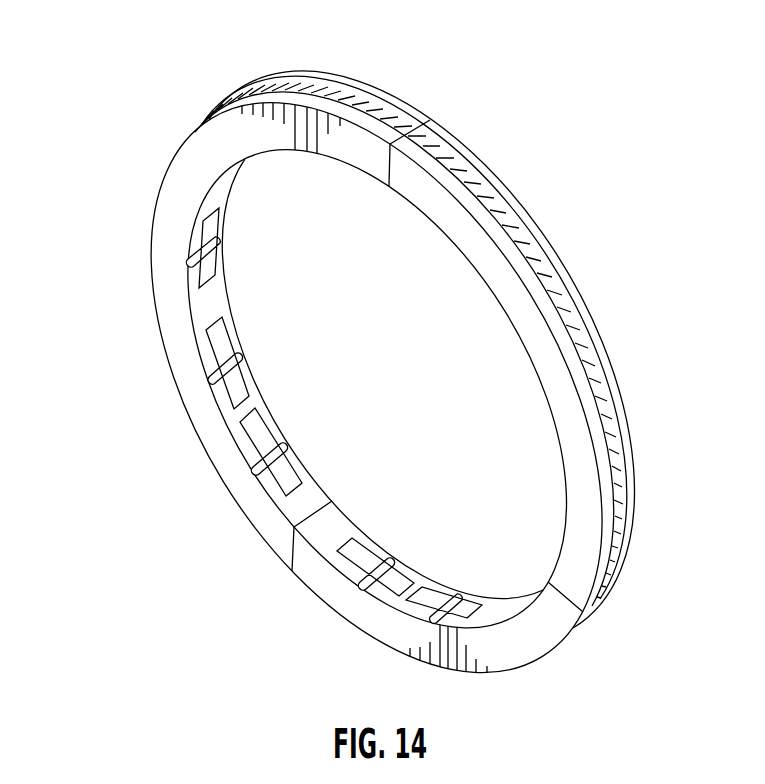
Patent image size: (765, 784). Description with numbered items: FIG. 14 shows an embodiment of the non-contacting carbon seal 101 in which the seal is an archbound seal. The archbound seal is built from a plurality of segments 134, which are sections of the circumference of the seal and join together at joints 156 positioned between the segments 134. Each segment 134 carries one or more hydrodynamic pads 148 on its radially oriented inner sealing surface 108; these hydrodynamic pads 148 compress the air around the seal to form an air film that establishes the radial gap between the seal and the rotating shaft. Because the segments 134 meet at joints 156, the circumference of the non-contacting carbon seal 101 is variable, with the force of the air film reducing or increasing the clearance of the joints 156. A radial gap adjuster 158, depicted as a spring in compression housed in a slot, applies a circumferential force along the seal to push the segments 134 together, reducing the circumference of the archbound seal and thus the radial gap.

The non-contacting carbon seal 101 is at (97, 118).
The inner sealing surface 108 is at (223, 307).
The segments 134 is at (357, 84).
The hydrodynamic pads 148 is at (287, 465).
The joints 156 is at (437, 114).
The radial gap adjuster 158 is at (573, 310).